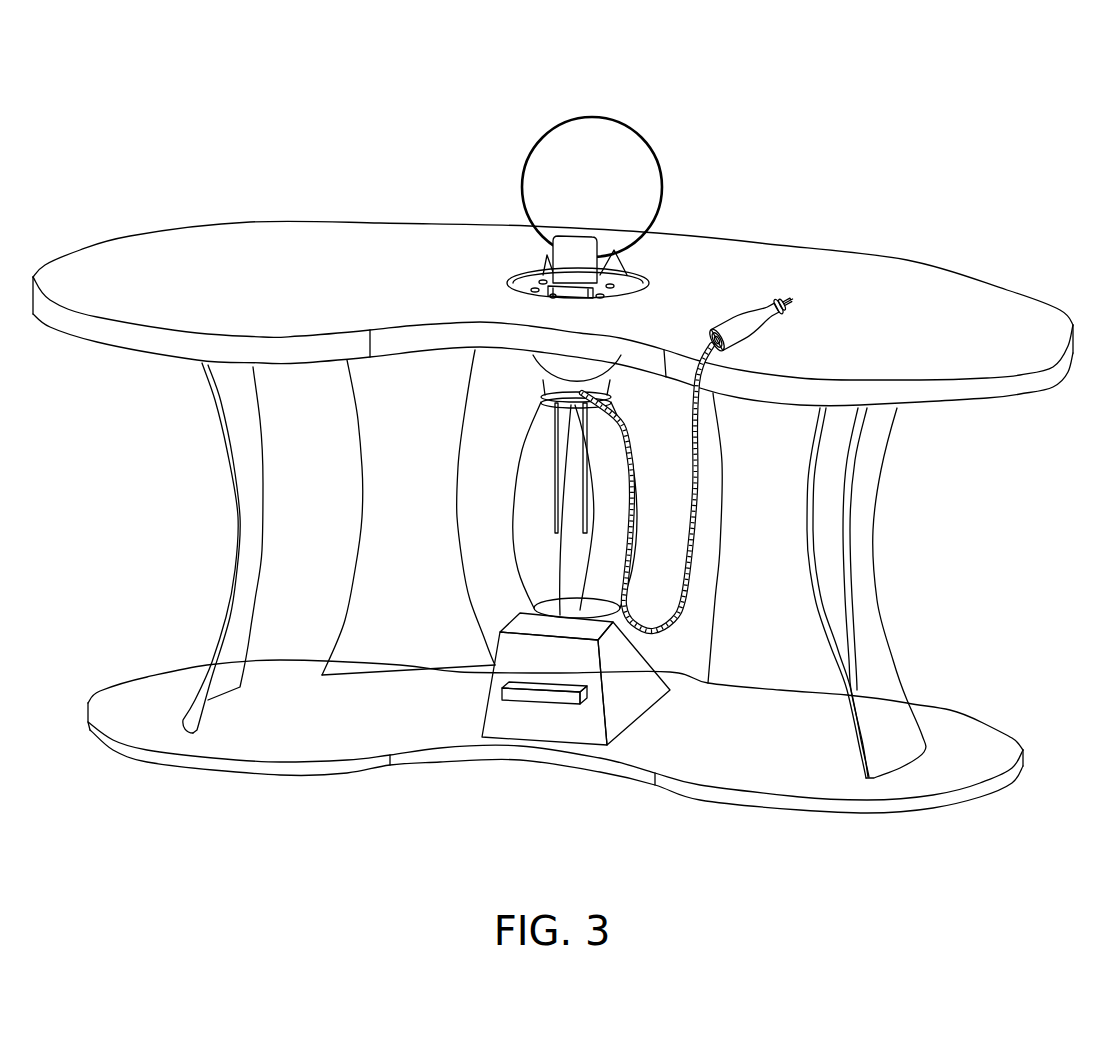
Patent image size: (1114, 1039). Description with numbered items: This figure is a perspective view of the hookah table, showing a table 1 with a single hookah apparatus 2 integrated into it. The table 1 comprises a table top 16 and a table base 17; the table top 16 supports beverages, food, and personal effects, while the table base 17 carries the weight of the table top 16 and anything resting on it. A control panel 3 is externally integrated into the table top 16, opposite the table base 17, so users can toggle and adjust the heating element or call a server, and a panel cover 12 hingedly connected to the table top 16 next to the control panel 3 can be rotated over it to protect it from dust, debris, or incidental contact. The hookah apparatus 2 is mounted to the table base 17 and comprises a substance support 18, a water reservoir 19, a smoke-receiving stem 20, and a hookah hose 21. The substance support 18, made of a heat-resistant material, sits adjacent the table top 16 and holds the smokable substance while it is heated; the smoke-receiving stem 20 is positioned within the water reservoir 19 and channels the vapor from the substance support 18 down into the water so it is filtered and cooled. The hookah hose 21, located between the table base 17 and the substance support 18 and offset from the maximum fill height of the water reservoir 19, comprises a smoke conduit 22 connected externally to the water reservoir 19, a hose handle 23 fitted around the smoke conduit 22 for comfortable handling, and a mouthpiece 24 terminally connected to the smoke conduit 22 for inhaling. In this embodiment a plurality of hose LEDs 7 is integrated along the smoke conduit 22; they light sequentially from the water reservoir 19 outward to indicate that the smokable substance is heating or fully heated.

The table 1 is at (367, 105).
The hookah apparatus 2 is at (595, 800).
The control panel 3 is at (580, 165).
The hose light emitting diodes 7 is at (693, 417).
The panel cover 12 is at (543, 165).
The table top 16 is at (205, 245).
The table base 17 is at (226, 460).
The substance support 18 is at (557, 366).
The water reservoir 19 is at (613, 623).
The smoke-receiving stem 20 is at (583, 497).
The hookah hose 21 is at (848, 235).
The smoke conduit 22 is at (710, 450).
The hose handle 23 is at (735, 318).
The mouthpiece 24 is at (800, 303).